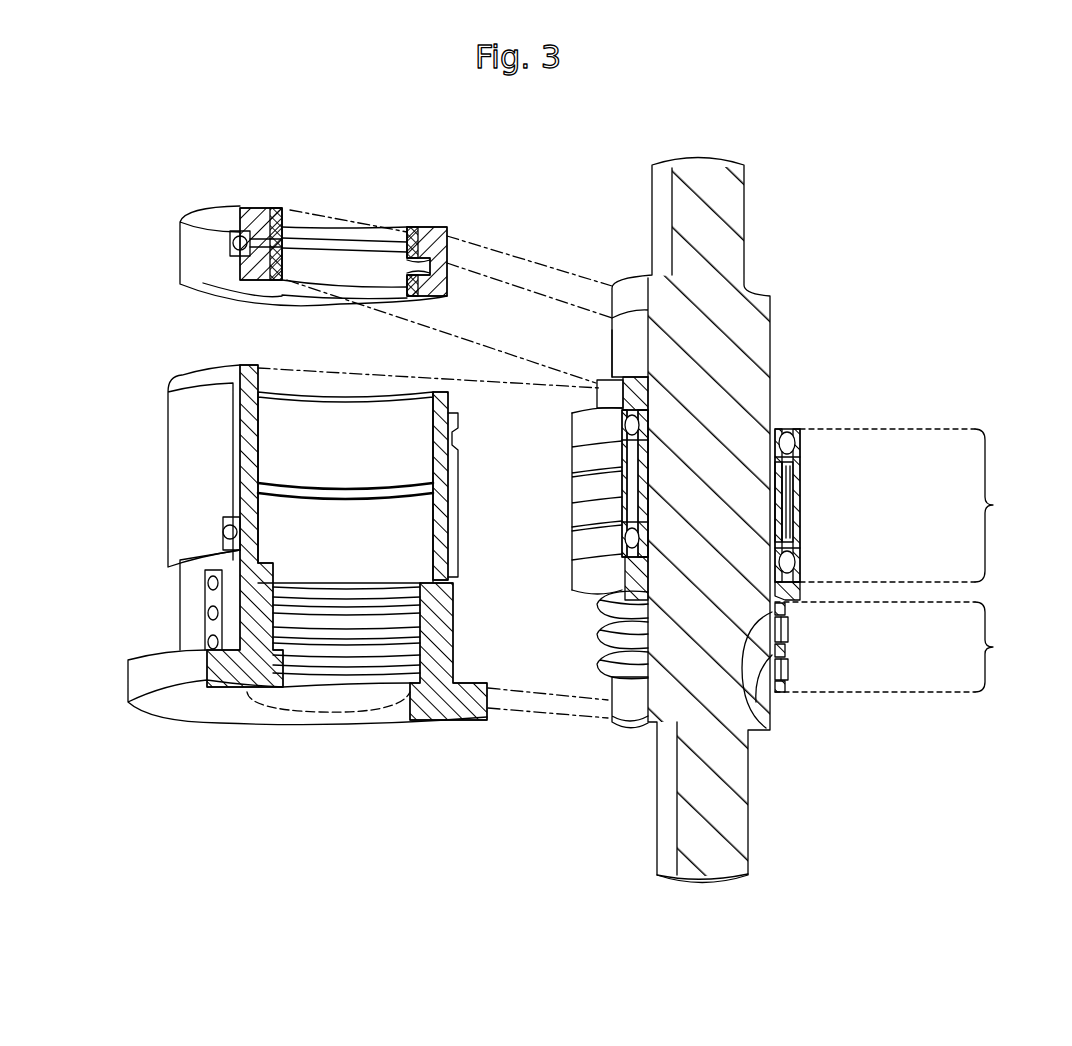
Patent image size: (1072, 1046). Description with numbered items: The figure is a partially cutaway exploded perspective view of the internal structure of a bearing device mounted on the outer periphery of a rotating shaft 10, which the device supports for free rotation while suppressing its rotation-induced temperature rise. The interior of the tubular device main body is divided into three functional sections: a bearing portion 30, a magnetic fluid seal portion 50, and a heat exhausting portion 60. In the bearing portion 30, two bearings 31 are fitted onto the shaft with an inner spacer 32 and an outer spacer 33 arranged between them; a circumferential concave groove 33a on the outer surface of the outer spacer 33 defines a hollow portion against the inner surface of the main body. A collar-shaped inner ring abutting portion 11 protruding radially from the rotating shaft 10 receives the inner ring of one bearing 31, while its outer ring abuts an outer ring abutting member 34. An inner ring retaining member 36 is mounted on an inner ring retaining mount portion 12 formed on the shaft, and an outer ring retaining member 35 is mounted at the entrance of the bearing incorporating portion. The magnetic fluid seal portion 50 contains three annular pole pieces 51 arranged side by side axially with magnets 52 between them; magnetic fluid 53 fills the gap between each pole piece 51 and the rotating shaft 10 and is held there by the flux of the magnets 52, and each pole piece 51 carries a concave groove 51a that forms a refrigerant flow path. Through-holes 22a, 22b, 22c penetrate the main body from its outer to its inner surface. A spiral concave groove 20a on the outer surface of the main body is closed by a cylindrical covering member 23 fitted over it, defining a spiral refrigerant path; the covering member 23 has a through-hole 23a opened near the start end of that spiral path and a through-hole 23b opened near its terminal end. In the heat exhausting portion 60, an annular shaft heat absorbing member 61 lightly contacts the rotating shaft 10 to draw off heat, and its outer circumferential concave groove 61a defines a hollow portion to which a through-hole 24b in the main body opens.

The rotating shaft 10 is at (756, 192).
The inner ring abutting portion 11 is at (620, 560).
The inner ring retaining mount portion 12 is at (597, 377).
The concave groove 20a is at (237, 503).
The through-hole 22a is at (207, 643).
The through-hole 22b is at (207, 615).
The through-hole 22c is at (207, 583).
The covering member 23 is at (178, 458).
The through-hole 23a is at (227, 533).
The through-hole 23b is at (460, 430).
The through-hole 24b is at (226, 240).
The bearing portion 30 is at (819, 505).
The bearing 31 is at (800, 448).
The inner spacer 32 is at (800, 480).
The outer spacer 33 is at (800, 525).
The concave groove 33a is at (580, 490).
The outer ring abutting member 34 is at (580, 575).
The outer ring retaining member 35 is at (590, 373).
The inner ring retaining member 36 is at (613, 357).
The magnetic fluid seal portion 50 is at (896, 647).
The pole piece 51 is at (790, 607).
The concave groove 51a is at (600, 598).
The magnet 52 is at (790, 628).
The magnetic fluid 53 is at (752, 732).
The heat exhausting portion 60 is at (170, 248).
The shaft heat absorbing member 61 is at (277, 208).
The concave groove 61a is at (245, 210).